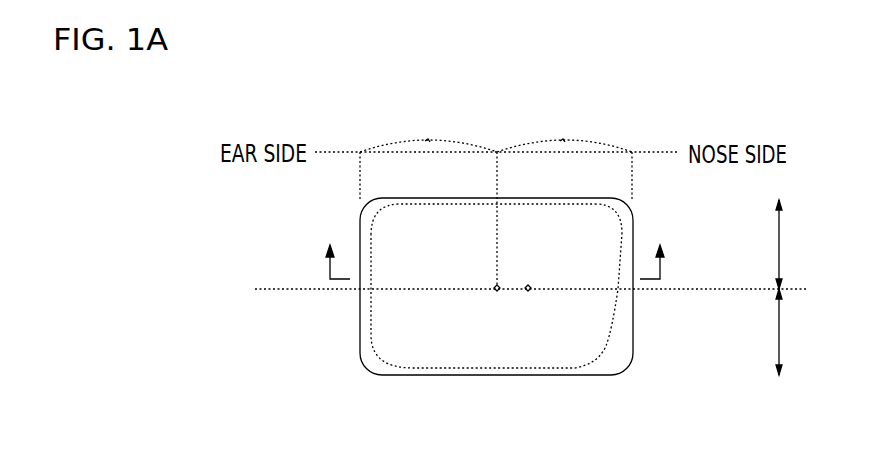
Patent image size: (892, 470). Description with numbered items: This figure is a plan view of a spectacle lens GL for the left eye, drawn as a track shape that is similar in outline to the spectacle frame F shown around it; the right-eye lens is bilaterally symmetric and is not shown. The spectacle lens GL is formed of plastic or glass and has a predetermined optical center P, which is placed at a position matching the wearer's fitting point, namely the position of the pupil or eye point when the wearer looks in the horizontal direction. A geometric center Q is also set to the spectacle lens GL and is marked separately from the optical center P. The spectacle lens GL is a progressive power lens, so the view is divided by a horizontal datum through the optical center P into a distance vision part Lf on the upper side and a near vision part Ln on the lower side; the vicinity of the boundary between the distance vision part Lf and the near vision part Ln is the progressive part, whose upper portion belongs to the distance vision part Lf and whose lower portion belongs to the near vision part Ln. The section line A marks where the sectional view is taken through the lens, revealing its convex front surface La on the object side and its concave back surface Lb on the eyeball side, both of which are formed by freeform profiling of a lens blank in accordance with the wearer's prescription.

The spectacle lens GL is at (634, 332).
The spectacle frame F is at (593, 357).
The geometric center Q is at (498, 303).
The optical center P is at (527, 303).
The line A- A is at (495, 250).
The distance vision part Lf is at (791, 244).
The near vision part Ln is at (792, 332).
The front surface La is at (503, 342).
The back surface Lb is at (457, 343).